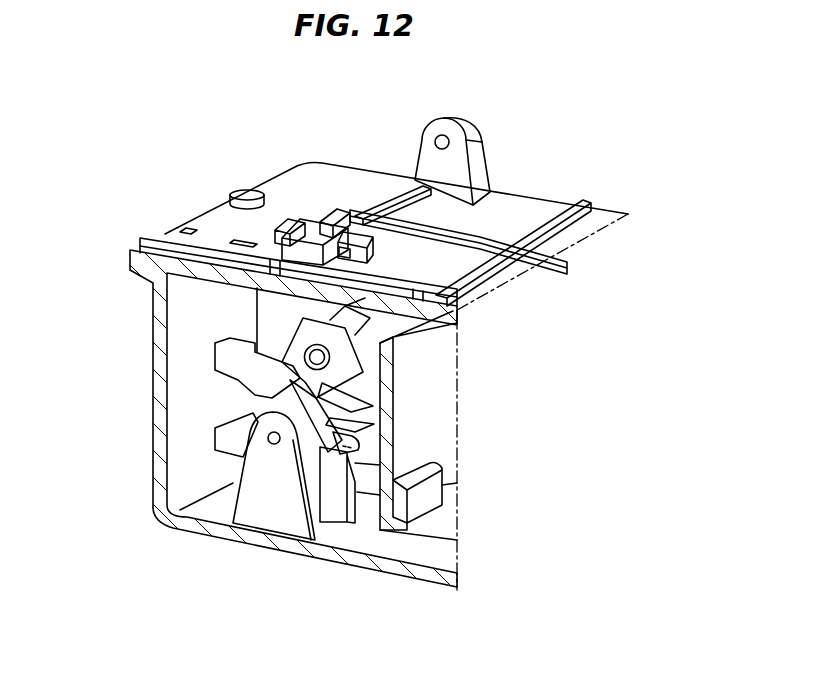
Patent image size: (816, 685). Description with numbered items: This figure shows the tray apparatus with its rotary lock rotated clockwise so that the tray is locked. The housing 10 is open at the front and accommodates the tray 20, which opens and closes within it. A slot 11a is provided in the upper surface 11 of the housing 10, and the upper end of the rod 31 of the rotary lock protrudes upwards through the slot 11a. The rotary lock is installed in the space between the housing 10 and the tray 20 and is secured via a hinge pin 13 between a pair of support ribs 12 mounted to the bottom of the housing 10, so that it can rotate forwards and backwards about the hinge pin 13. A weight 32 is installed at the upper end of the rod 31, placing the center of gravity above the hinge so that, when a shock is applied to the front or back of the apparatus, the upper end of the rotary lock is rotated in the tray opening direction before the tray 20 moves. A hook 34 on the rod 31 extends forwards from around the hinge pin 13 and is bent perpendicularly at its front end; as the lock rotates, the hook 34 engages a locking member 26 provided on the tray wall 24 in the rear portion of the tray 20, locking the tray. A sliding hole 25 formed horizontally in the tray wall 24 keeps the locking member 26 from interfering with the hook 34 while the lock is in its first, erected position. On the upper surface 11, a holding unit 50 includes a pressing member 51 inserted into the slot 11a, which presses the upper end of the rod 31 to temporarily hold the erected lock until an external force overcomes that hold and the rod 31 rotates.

The housing 10 is at (427, 550).
The upper surface 11 is at (518, 215).
The slot 11a is at (272, 238).
The support ribs 12 is at (267, 508).
The hinge pin 13 is at (266, 442).
The tray 20 is at (445, 515).
The tray wall 24 is at (230, 435).
The sliding hole 25 is at (365, 420).
The locking member 26 is at (330, 407).
The rod 31 is at (300, 398).
The weight 32 is at (340, 363).
The hook 34 is at (327, 467).
The holding unit 50 is at (313, 220).
The pressing member 51 is at (278, 235).